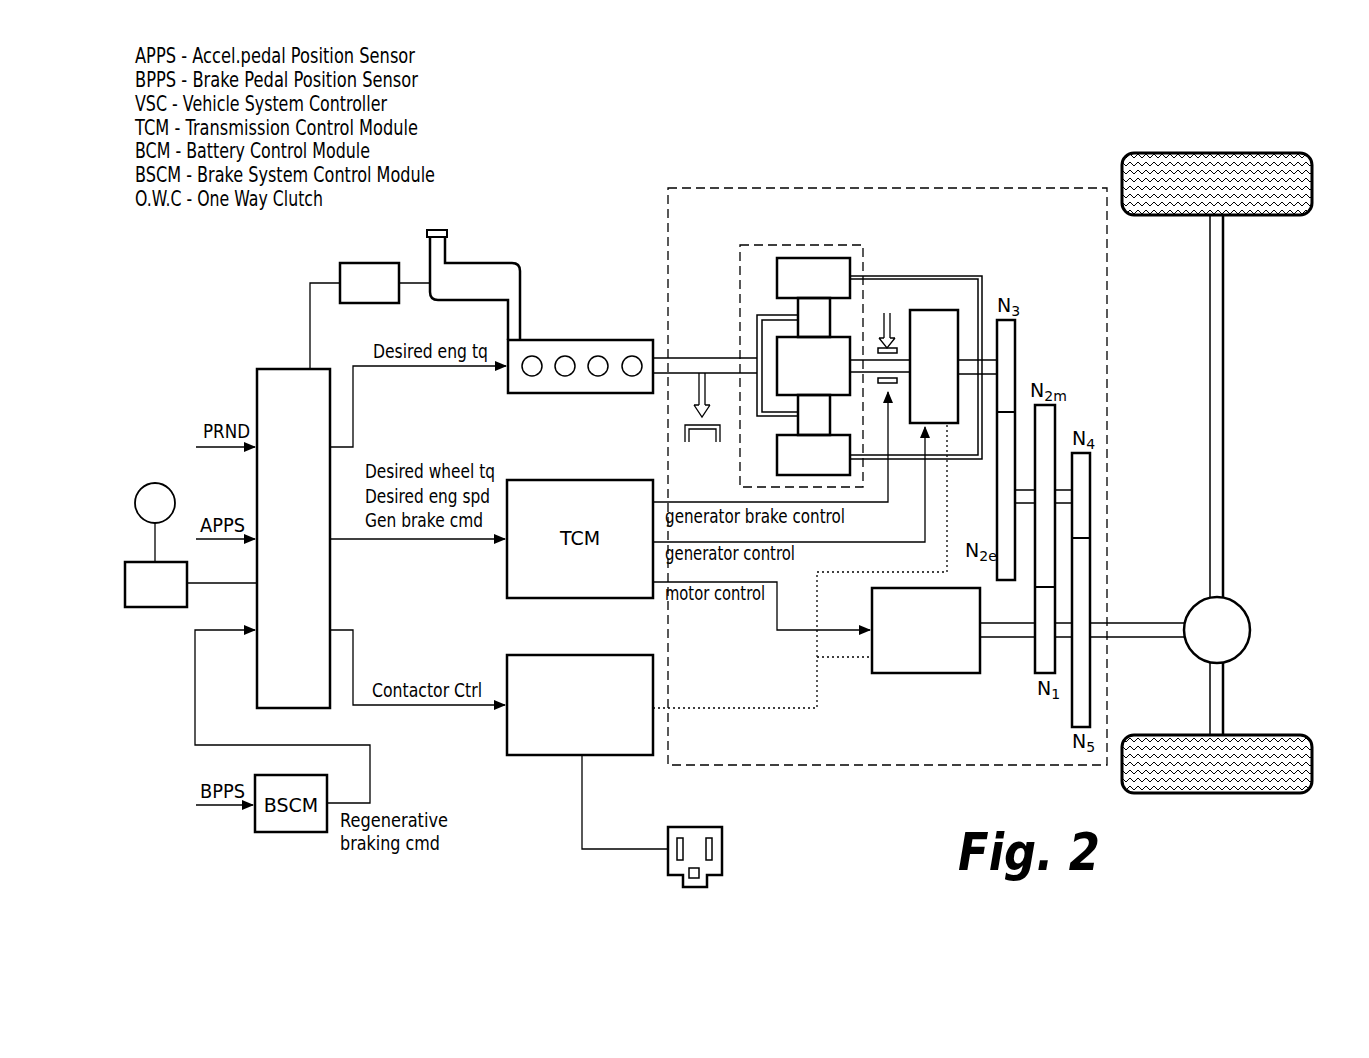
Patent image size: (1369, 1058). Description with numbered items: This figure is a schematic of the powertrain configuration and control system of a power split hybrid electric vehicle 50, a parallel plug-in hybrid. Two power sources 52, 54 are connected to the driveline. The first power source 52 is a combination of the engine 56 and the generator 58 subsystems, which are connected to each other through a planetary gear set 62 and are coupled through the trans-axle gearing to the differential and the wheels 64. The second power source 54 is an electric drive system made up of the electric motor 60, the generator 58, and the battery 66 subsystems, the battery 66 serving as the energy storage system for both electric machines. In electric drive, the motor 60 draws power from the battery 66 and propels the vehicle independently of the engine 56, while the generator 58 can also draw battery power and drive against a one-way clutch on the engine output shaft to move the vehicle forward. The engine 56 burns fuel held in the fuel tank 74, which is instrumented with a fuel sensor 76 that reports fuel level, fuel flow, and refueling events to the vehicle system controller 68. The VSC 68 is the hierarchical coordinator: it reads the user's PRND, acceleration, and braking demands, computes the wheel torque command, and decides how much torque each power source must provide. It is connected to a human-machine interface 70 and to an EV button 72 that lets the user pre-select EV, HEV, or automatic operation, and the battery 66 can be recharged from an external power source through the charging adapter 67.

The power split hybrid electric vehicle 50 is at (712, 777).
The first power source 52 is at (693, 300).
The second power source 54 is at (796, 730).
The engine 56 is at (565, 378).
The generator 58 is at (935, 310).
The electric motor 60 is at (922, 673).
The planetary gear set 62 is at (757, 245).
The vehicle wheels 64 is at (1215, 153).
The battery 66 is at (540, 755).
The charging adapter 67 is at (722, 849).
The vehicle system controller 68 is at (281, 369).
The human-machine interface 70 is at (191, 584).
The EV button 72 is at (155, 522).
The fuel tank 74 is at (473, 285).
The fuel sensor 76 is at (370, 316).